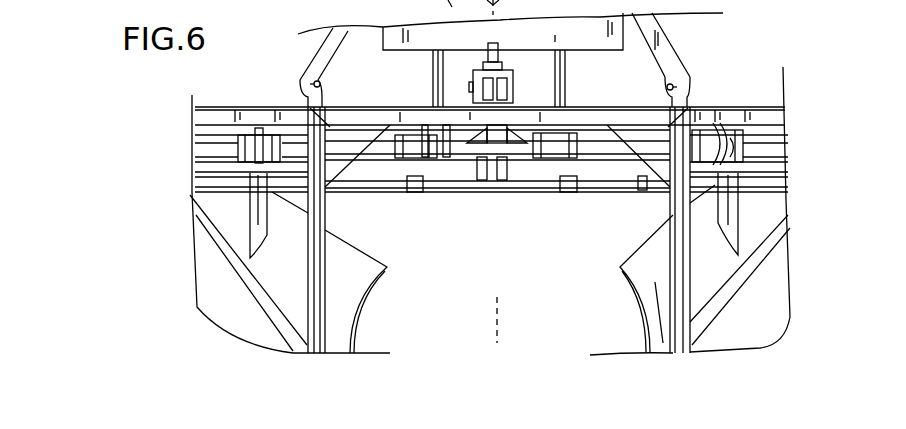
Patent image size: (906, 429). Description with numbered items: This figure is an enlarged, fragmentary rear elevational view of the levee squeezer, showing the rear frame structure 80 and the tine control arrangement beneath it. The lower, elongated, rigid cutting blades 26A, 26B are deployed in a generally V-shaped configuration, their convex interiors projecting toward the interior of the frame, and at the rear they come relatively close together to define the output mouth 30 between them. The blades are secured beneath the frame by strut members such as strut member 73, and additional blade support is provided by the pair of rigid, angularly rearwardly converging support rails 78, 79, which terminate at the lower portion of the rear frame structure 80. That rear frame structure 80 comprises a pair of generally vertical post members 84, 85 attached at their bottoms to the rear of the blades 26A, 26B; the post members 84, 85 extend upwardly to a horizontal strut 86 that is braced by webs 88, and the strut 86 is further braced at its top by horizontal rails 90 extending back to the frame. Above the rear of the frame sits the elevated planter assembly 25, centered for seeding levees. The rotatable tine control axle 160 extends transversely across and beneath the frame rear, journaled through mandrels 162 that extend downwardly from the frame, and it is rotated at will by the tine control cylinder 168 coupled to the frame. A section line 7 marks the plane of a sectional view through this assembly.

The section line 7 is at (488, 352).
The elevated planter assembly 25 is at (550, 36).
The cutting blade 26A is at (356, 291).
The cutting blade 26B is at (646, 283).
The output mouth 30 is at (407, 278).
The strut member 73 is at (257, 213).
The support rail 78 is at (720, 298).
The support rail 79 is at (247, 277).
The rear frame structure 80 is at (382, 203).
The post member 84 is at (315, 277).
The post member 85 is at (677, 215).
The horizontal strut 86 is at (455, 118).
The web 88 is at (364, 147).
The horizontal rail 90 is at (705, 113).
The tine control axle 160 is at (222, 147).
The mandrel 162 is at (735, 143).
The tine control cylinder 168 is at (510, 76).